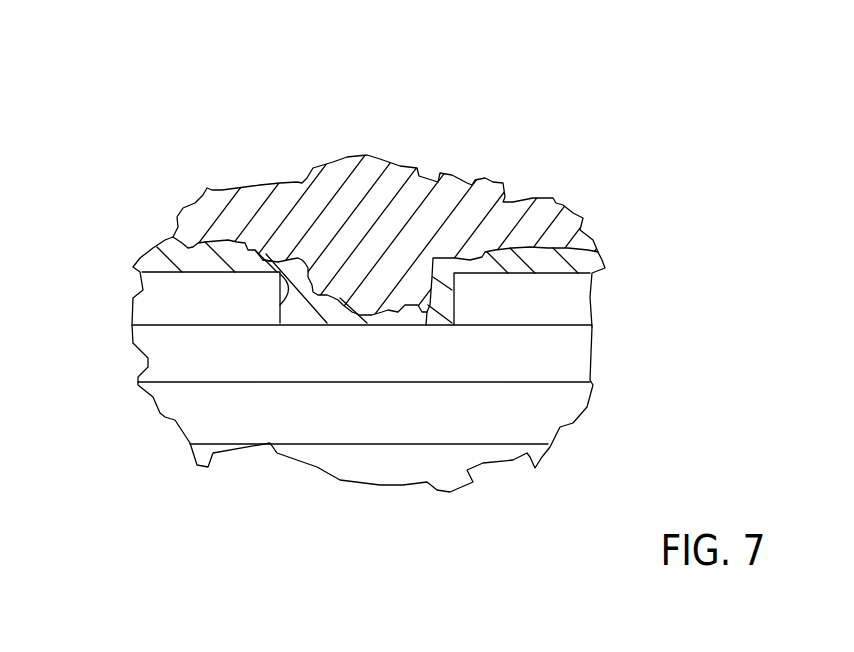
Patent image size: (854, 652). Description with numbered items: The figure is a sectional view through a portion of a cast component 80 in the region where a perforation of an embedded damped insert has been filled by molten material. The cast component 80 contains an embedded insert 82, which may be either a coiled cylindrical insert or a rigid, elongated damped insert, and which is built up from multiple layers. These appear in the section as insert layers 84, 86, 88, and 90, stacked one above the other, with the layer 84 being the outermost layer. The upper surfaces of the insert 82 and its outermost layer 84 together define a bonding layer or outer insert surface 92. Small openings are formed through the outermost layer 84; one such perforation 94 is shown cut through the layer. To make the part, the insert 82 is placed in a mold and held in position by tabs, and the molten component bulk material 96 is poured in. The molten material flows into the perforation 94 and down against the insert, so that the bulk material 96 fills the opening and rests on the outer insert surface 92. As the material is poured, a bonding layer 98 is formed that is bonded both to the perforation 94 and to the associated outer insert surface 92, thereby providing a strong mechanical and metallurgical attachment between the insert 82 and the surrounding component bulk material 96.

The cast component 80 is at (433, 92).
The embedded insert 82 is at (565, 348).
The insert layer 84 is at (143, 292).
The insert layer 86 is at (170, 347).
The insert layer 88 is at (217, 395).
The insert layer 90 is at (383, 463).
The outer insert surface 92 is at (464, 457).
The perforation 94 is at (266, 254).
The component bulk material 96 is at (462, 202).
The bonding layer 98 is at (585, 268).